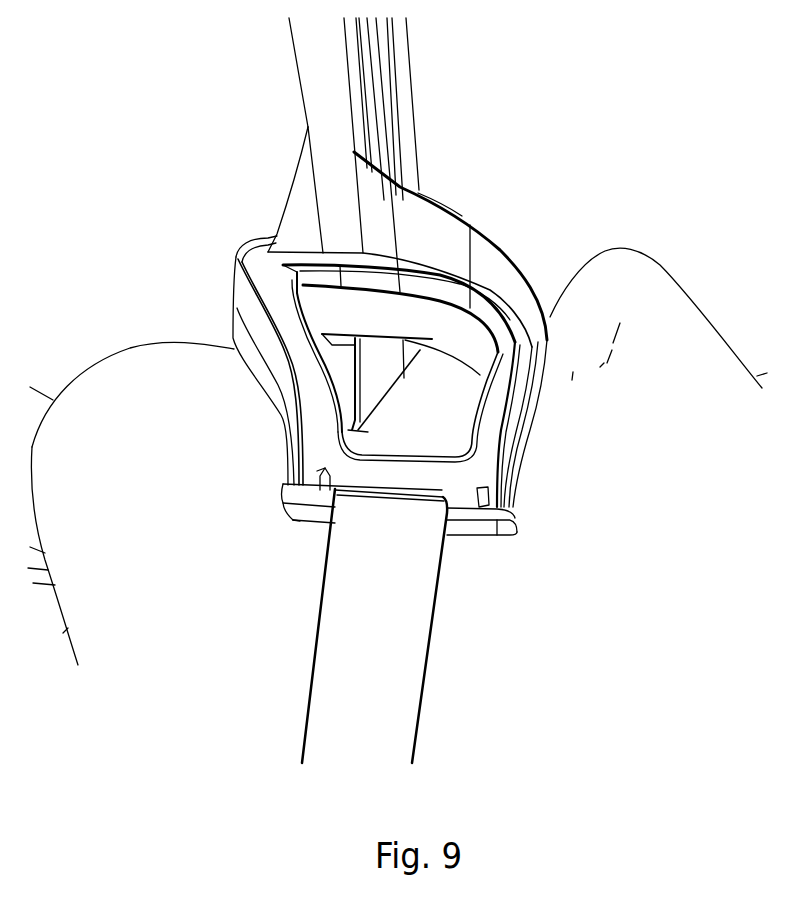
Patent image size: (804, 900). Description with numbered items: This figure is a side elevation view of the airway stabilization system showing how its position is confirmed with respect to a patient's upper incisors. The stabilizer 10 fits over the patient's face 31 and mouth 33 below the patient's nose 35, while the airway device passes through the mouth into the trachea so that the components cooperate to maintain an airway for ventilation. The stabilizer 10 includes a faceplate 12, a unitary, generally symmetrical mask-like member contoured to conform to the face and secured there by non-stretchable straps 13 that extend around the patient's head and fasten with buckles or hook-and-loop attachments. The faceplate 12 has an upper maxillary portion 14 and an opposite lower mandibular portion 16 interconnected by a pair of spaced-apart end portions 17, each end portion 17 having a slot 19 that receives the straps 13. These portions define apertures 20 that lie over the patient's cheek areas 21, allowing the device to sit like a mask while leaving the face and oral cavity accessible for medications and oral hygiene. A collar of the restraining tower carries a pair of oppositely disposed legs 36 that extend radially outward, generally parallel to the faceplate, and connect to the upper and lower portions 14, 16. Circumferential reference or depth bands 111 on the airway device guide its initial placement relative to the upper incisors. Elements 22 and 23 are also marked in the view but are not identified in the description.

The stabilizer 10 is at (223, 280).
The faceplate 12 is at (278, 303).
The non-stretchable straps 13 is at (387, 557).
The upper (maxillary) portion 14 is at (502, 384).
The lower (mandibular) portion 16 is at (306, 345).
The end portions 17 is at (307, 491).
The aperture or slot 19 is at (323, 479).
The apertures 20 is at (440, 411).
The cheek areas 21 is at (512, 570).
The pin 22 is at (363, 398).
The plate 23 is at (343, 343).
The patient's face 31 is at (651, 621).
The patient's mouth 33 is at (353, 427).
The patient's nose 35 is at (623, 273).
The legs 36 is at (457, 237).
The reference or depth markers or bands 111 is at (387, 343).